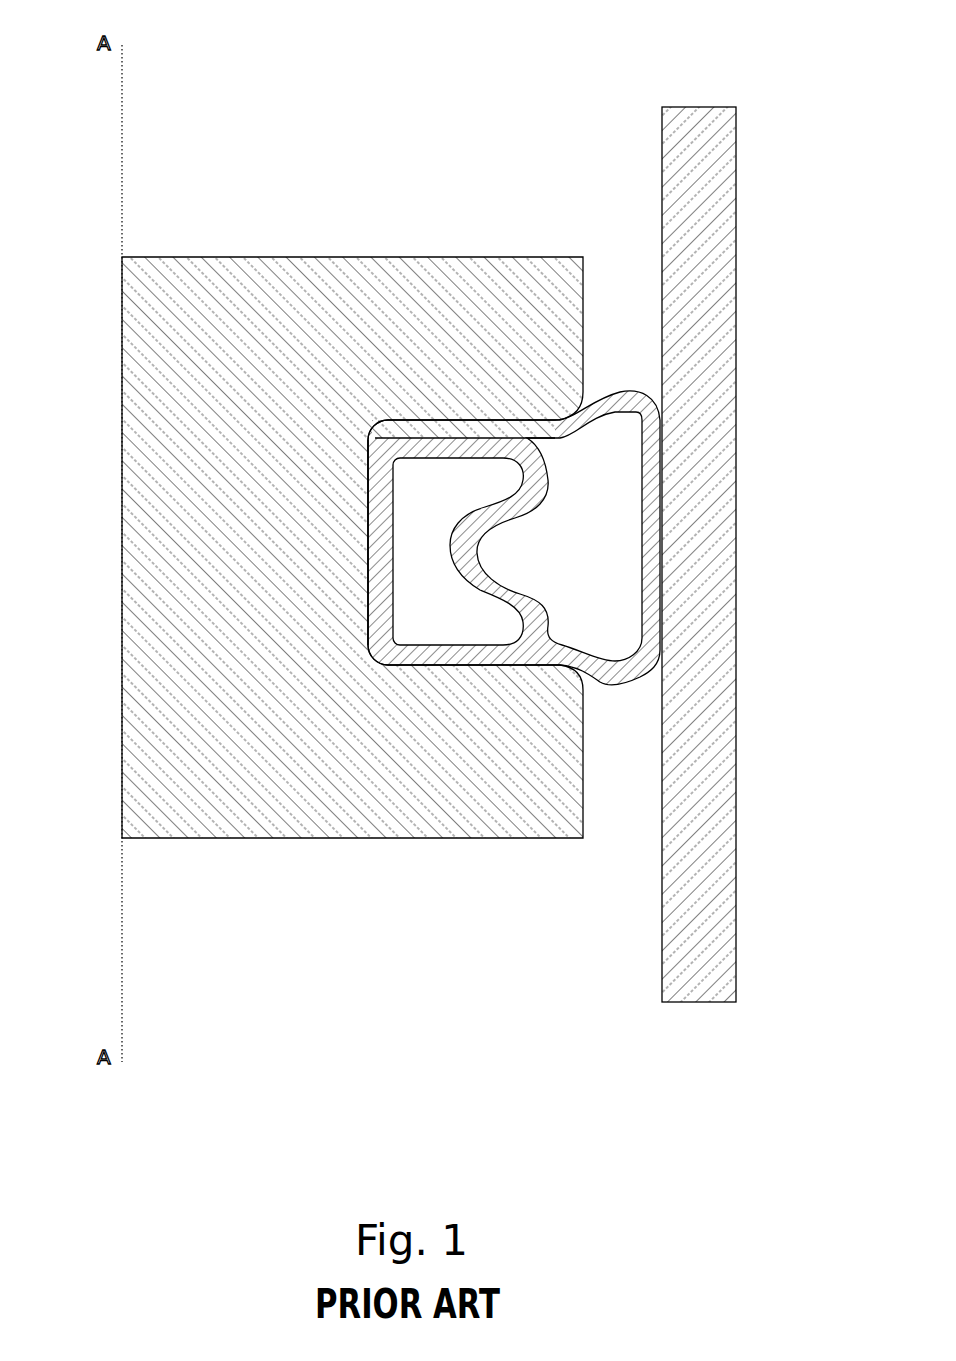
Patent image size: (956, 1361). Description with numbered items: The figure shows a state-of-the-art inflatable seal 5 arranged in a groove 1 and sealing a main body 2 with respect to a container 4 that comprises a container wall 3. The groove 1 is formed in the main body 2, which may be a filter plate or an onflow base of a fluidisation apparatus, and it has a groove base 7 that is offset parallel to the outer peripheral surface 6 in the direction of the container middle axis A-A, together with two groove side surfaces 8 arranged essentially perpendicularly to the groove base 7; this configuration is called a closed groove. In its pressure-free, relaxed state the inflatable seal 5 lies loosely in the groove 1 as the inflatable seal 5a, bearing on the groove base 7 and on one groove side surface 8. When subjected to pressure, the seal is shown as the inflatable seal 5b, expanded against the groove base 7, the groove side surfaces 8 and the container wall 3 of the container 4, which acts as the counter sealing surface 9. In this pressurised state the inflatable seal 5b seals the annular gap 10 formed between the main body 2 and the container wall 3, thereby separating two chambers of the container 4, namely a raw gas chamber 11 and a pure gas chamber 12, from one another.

The groove 1 is at (450, 692).
The main body 2 is at (268, 300).
The container wall 3 is at (700, 208).
The container 4 is at (752, 110).
The inflatable seal 5 is at (645, 378).
The inflatable seal in the pressure-free, relaxed state 5a is at (530, 629).
The inflatable seal in the pressurised state 5b is at (653, 483).
The outer peripheral surface 6 is at (594, 310).
The groove base 7 is at (362, 547).
The groove side surfaces 8 is at (432, 432).
The counter sealing surface 9 is at (650, 540).
The annular gap 10 is at (622, 835).
The raw gas chamber 11 is at (636, 754).
The pure gas chamber 12 is at (636, 351).